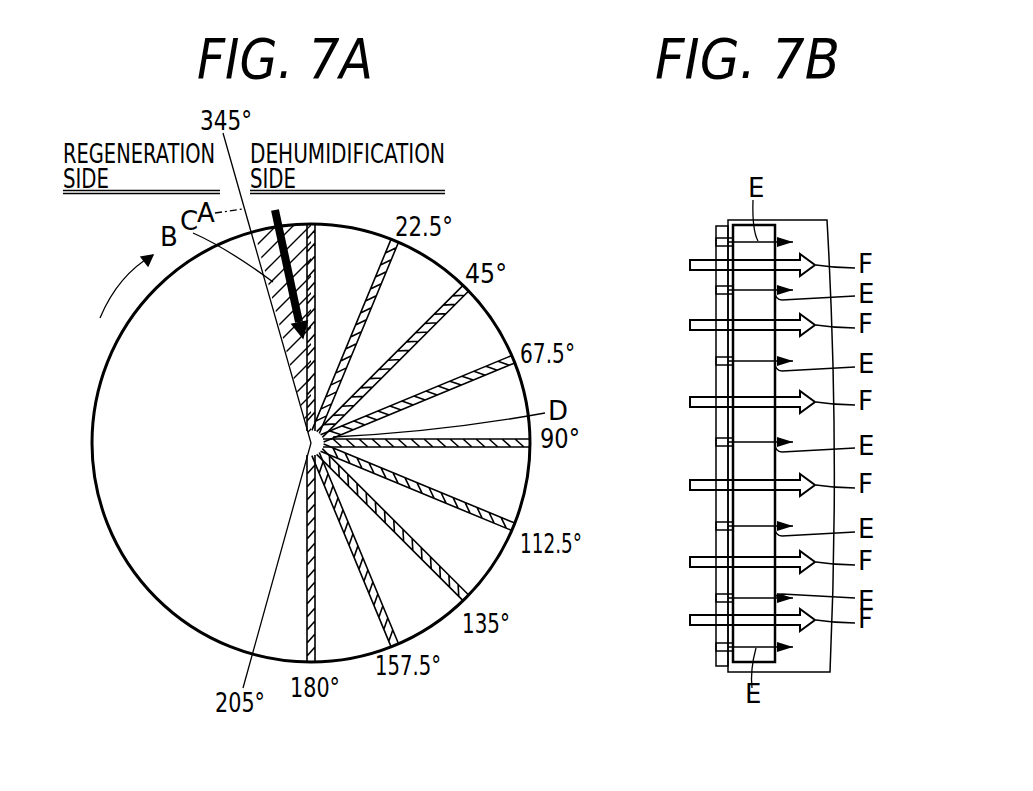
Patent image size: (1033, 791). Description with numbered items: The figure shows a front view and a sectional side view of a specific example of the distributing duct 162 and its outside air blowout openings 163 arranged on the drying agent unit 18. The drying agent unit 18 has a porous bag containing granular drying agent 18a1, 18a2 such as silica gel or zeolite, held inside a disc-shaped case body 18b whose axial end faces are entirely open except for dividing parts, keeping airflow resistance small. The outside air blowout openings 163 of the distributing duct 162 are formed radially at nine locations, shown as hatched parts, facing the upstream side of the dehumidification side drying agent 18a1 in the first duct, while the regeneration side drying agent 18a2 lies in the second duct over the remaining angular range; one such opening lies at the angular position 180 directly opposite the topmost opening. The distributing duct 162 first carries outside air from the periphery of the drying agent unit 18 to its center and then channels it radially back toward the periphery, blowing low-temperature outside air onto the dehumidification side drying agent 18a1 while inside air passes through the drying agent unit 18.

In FIG. 7A, the drying agent unit 18 is at (493, 575).
In FIG. 7B, the drying agent unit 18 is at (776, 230).
In FIG. 7A, the dehumidification side drying agent 18a1 is at (463, 563).
In FIG. 7A, the regeneration side drying agent 18a2 is at (175, 565).
In FIG. 7A, the case body 18b is at (527, 500).
In FIG. 7B, the case body 18b is at (763, 253).
In FIG. 7A, the distributing duct 162 is at (283, 357).
In FIG. 7B, the distributing duct 162 is at (722, 224).
In FIG. 7A, the outside air blowout openings 163 is at (316, 253).
In FIG. 7B, the outside air blowout openings 163 is at (716, 244).
In FIG. 7A, the angular position 180 degrees 180 is at (300, 612).